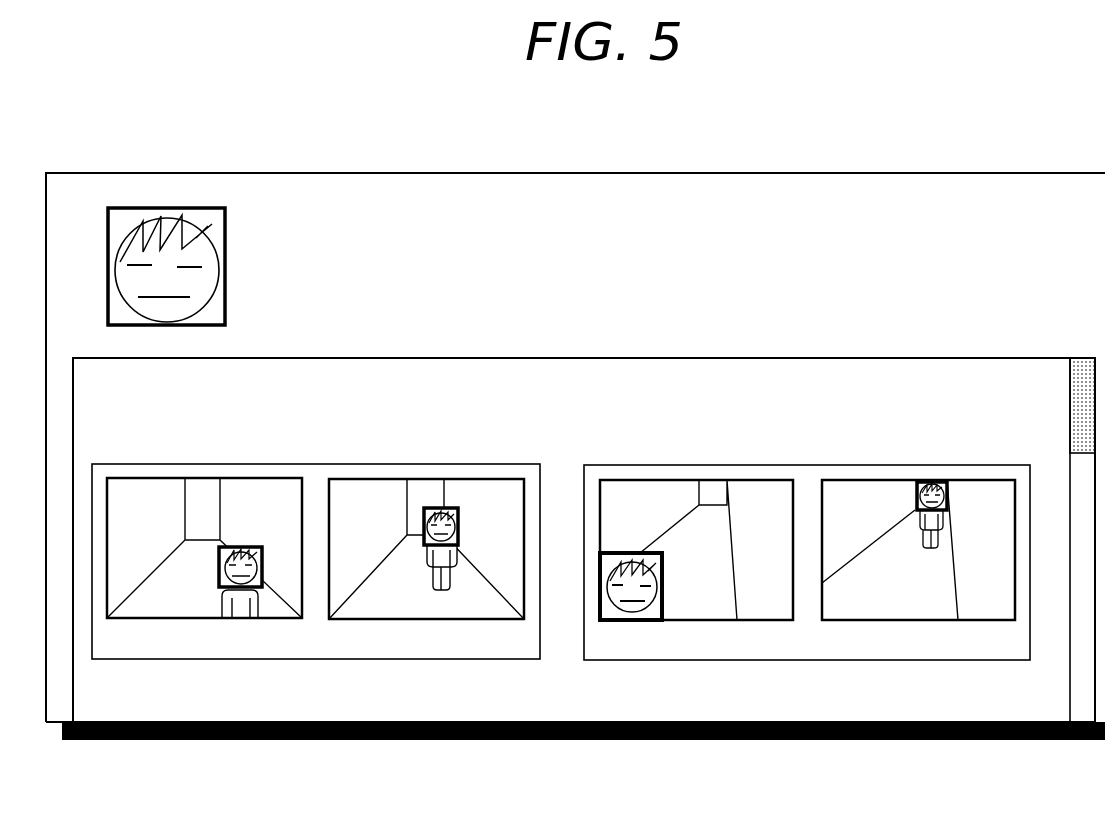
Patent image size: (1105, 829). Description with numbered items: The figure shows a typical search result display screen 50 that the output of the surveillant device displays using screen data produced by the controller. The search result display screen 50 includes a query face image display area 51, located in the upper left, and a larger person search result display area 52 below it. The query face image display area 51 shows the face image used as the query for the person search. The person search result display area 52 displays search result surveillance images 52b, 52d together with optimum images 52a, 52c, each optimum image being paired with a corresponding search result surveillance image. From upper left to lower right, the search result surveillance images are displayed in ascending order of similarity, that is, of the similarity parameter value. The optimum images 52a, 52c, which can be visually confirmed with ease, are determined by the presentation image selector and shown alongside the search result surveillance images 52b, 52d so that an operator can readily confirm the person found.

The search result display screen 50 is at (680, 161).
The query face image display area 51 is at (226, 250).
The person search result display area 52 is at (647, 358).
The optimum image 52a is at (253, 464).
The search result surveillance image 52b is at (457, 479).
The optimum image 52c is at (710, 480).
The search result surveillance image 52d is at (963, 478).